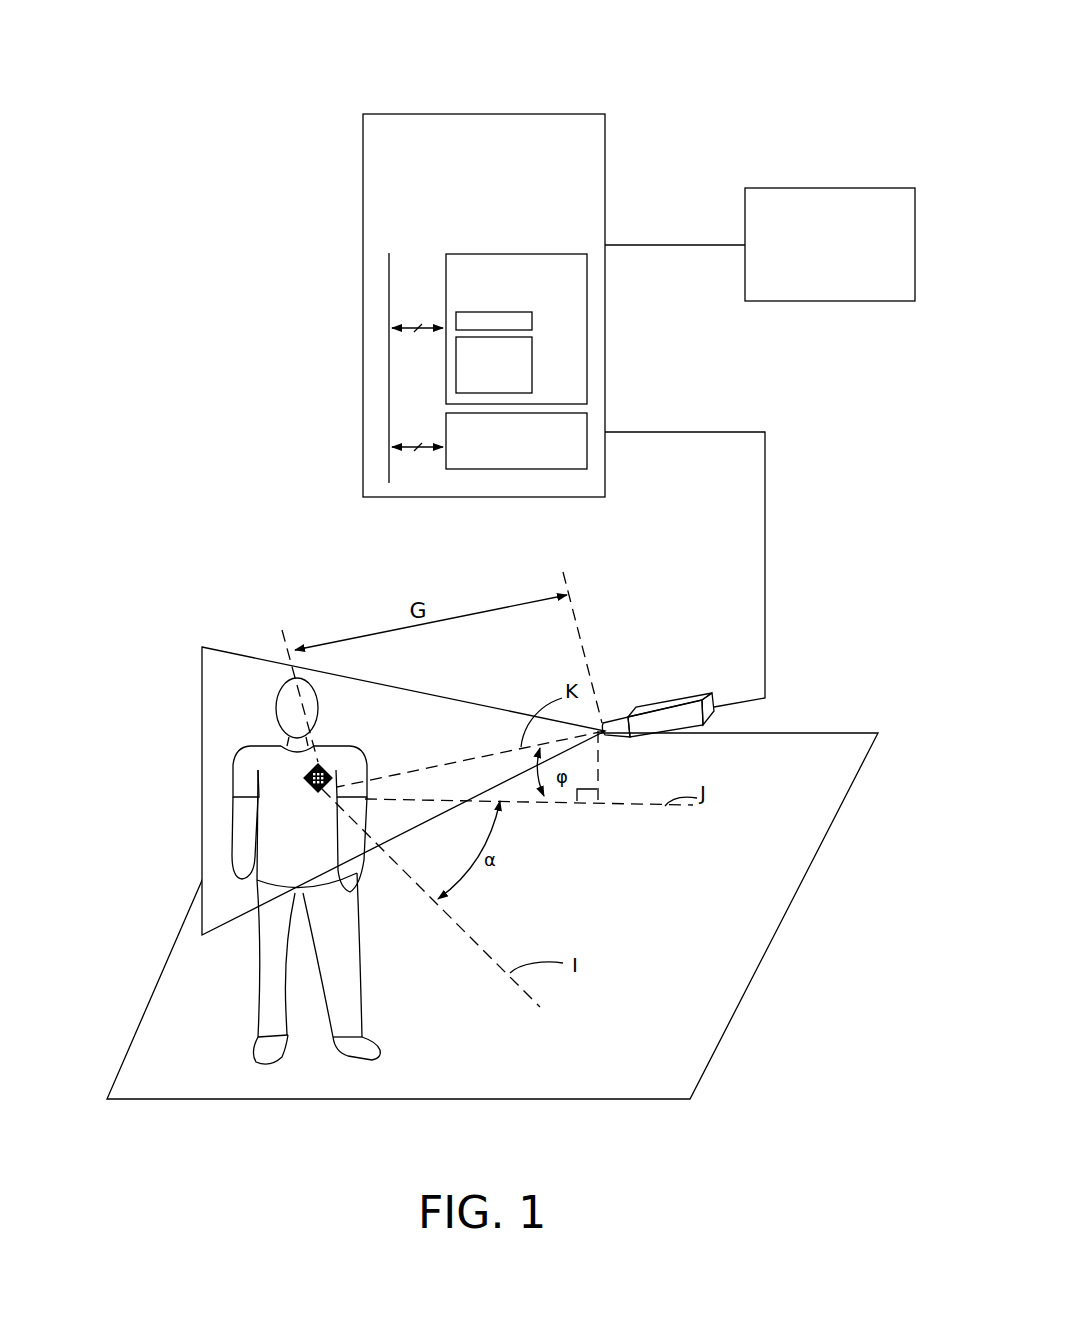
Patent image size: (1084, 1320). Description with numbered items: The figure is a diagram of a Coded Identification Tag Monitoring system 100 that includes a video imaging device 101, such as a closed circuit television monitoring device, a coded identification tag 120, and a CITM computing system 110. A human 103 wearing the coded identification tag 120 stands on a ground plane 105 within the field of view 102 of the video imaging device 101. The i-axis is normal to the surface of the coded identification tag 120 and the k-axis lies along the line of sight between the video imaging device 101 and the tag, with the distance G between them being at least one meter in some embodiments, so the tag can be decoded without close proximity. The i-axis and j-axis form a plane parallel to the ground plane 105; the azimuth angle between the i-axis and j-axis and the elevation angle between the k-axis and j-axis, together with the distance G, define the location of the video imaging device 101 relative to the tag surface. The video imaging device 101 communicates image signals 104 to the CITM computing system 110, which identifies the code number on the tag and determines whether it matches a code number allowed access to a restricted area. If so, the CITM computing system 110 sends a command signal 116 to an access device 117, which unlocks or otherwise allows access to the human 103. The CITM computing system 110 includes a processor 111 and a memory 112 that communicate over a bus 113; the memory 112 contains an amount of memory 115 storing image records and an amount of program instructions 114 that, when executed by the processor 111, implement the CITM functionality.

The Coded Identification Tag Monitoring (CITM) system 100 is at (143, 56).
The video imaging device 101 is at (652, 708).
The field of view 102 is at (403, 791).
The human 103 is at (234, 770).
The image signals 104 is at (702, 447).
The ground plane 105 is at (771, 938).
The CITM computing system 110 is at (469, 239).
The processor 111 is at (500, 463).
The memory 112 is at (500, 305).
The bus 113 is at (389, 284).
The program instructions 114 is at (533, 325).
The amount of memory storing image records 115 is at (533, 365).
The command signal 116 is at (702, 231).
The access device 117 is at (812, 286).
The coded identification tag 120 is at (310, 784).